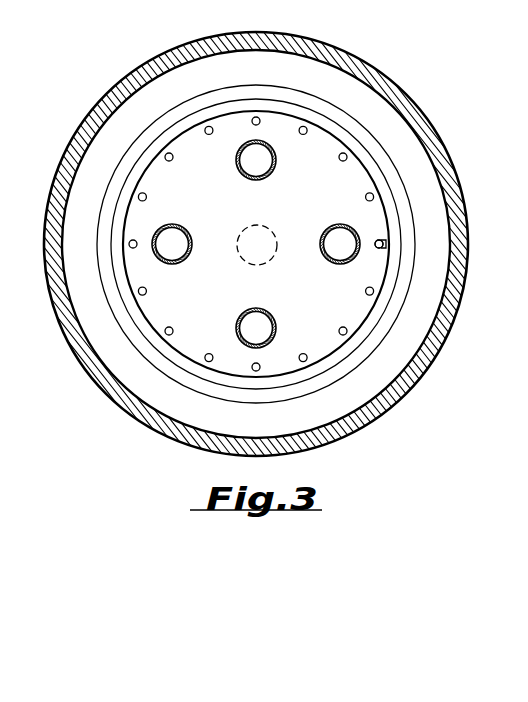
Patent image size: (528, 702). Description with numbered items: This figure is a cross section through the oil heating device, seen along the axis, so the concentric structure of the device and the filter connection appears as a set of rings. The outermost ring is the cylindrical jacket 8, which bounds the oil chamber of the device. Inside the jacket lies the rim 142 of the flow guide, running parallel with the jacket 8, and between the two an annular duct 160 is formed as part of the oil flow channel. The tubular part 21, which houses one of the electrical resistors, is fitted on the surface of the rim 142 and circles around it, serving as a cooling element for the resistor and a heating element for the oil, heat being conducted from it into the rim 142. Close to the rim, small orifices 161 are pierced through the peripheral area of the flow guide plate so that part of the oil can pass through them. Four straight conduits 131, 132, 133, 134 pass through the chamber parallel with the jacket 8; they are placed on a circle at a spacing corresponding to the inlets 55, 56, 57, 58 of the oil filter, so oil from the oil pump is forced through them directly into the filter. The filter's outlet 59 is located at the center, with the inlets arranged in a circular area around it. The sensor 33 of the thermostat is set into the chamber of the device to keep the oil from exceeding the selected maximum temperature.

The cylindrical jacket 8 is at (437, 338).
The annular duct 160 is at (80, 216).
The tubular part 21 is at (400, 193).
The rim 142 is at (372, 165).
The small orifices 161 is at (168, 161).
The sensor 33 is at (372, 242).
The inlet 55 is at (174, 242).
The inlet 56 is at (260, 331).
The inlet 57 is at (338, 243).
The inlet 58 is at (262, 162).
The conduit 131 is at (172, 265).
The conduit 132 is at (238, 330).
The conduit 133 is at (338, 265).
The conduit 134 is at (254, 181).
The outlet 59 is at (262, 252).